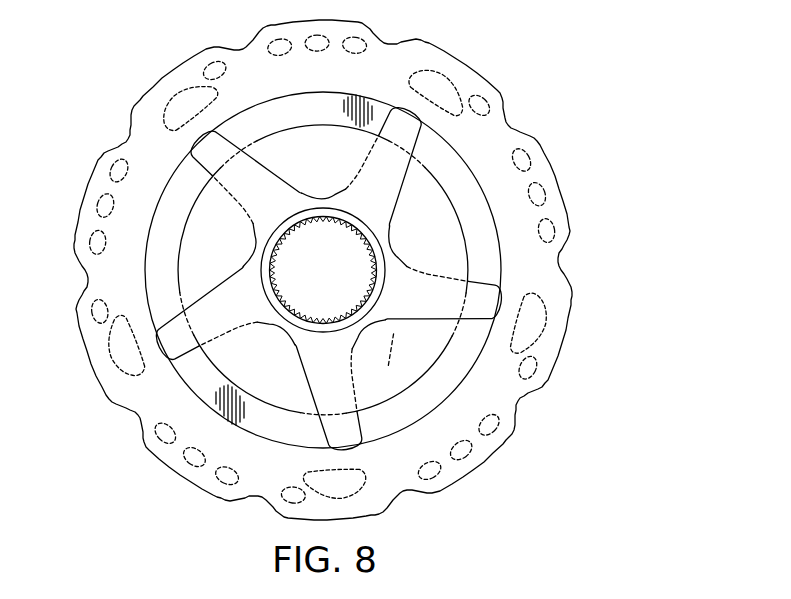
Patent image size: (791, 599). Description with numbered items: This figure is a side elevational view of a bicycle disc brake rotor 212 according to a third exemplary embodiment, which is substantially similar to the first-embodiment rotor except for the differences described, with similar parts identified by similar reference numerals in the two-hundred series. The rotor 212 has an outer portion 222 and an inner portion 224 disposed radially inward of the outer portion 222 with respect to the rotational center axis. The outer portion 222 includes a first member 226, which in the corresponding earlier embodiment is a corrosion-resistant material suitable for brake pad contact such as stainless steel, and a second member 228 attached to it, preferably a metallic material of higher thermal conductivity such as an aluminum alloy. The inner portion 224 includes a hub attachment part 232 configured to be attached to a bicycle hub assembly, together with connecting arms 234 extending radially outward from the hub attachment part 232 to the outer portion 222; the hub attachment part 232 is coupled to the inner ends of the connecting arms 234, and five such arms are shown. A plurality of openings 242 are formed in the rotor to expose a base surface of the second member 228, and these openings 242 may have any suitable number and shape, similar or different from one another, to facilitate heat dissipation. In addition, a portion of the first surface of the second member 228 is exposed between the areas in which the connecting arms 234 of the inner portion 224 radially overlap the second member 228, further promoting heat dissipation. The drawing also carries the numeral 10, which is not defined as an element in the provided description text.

The bicycle disc brake rotor assembly 10 is at (323, 260).
The bicycle disc brake rotor 212 is at (323, 260).
The outer portion 222 is at (147, 85).
The inner portion 224 is at (217, 334).
The first member 226 is at (133, 388).
The second member 228 is at (163, 237).
The hub attachment part 232 is at (397, 250).
The connecting arm 234 is at (347, 369).
The openings 242 is at (108, 169).